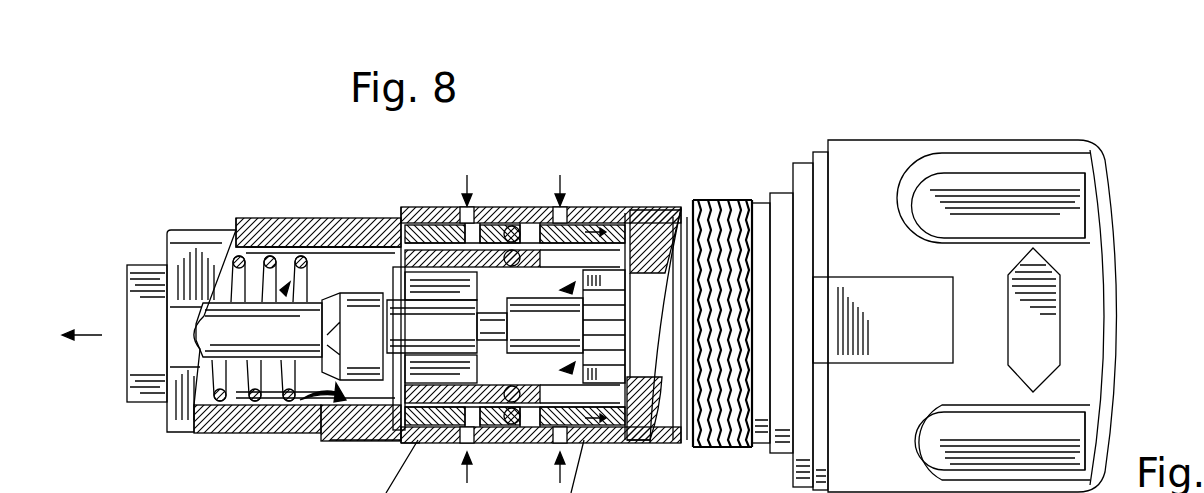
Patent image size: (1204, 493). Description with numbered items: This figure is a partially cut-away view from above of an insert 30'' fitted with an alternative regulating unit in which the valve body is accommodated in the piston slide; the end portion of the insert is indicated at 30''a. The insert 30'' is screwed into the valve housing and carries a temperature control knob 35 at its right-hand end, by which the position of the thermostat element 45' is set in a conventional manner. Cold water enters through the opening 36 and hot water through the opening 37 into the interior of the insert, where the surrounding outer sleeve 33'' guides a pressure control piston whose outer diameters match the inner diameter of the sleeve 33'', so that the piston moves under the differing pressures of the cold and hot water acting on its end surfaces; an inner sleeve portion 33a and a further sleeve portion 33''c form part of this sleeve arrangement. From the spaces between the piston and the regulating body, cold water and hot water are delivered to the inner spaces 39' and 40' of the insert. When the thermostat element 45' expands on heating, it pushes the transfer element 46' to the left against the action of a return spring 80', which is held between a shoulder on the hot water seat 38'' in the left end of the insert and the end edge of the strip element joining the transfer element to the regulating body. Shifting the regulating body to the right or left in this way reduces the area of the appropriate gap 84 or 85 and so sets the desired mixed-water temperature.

The insert 30'' is at (544, 272).
The housing end portion 30''a is at (668, 296).
The outer sleeve 33'' is at (297, 301).
The inner sleeve 33a is at (488, 207).
The sleeve portion 33''c is at (349, 465).
The temperature control knob 35 is at (1110, 212).
The cold water inlet opening 36 is at (556, 205).
The hot water inlet opening 37 is at (460, 215).
The hot water seat 38'' is at (181, 304).
The inner space 39' is at (506, 306).
The inner space 40' is at (284, 419).
The thermostat element 45' is at (352, 336).
The transfer element 46' is at (269, 238).
The return spring 80' is at (199, 417).
The gap 84 is at (394, 433).
The gap 85 is at (630, 446).